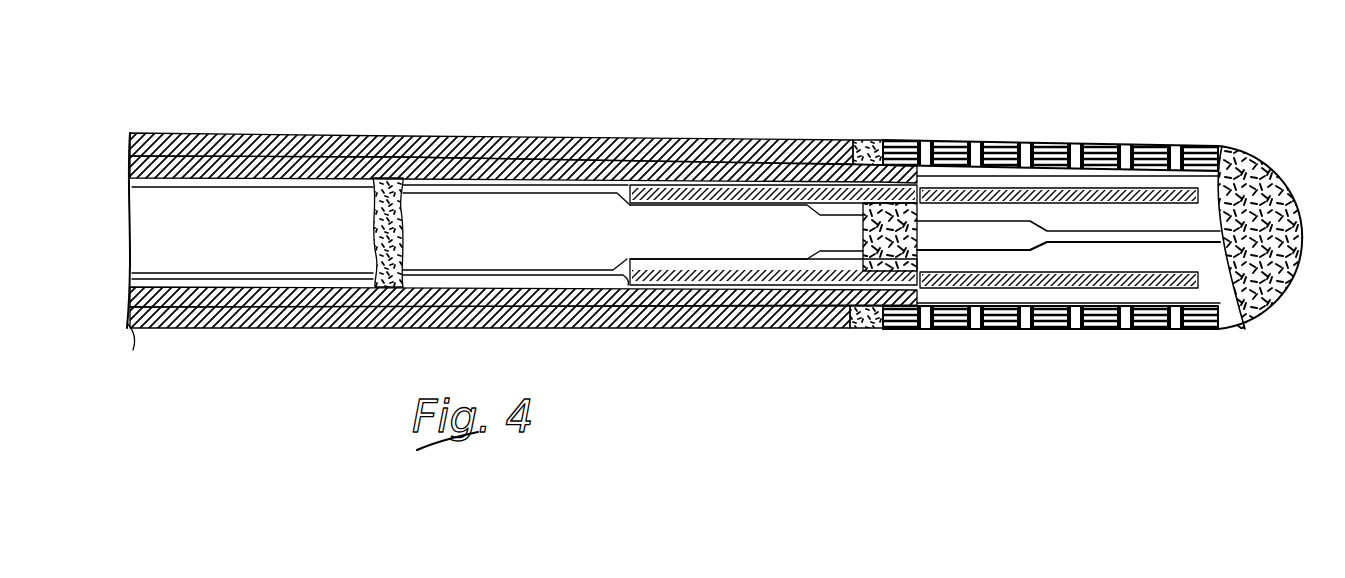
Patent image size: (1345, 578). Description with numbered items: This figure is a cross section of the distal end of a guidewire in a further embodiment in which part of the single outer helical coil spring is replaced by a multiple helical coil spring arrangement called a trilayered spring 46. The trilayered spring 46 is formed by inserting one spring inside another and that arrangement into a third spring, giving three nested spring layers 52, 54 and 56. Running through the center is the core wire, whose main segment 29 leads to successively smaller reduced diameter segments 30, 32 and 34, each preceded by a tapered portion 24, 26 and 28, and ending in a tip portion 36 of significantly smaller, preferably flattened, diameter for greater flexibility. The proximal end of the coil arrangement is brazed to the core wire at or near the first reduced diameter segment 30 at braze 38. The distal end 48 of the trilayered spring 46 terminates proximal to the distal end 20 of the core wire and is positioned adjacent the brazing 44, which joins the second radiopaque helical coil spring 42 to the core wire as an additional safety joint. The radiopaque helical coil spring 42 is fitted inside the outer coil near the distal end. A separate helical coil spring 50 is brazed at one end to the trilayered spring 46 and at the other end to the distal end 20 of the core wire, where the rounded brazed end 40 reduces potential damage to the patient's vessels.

The distal end of core wire 20 is at (1228, 323).
The tapered portion 24 is at (395, 182).
The tapered portion 26 is at (625, 281).
The tapered portion 28 is at (808, 262).
The main segment 29 is at (232, 203).
The reduced diameter segment 30 is at (528, 205).
The reduced diameter segment 32 is at (716, 228).
The reduced diameter segment 34 is at (983, 230).
The tip portion 36 is at (1132, 207).
The braze 38 is at (386, 287).
The brazed end 40 is at (1278, 328).
The second radiopaque helical coil spring 42 is at (830, 143).
The braze at proximal location 44 is at (920, 280).
The trilayered spring 46 is at (335, 132).
The distal end of trilayered spring 48 is at (873, 142).
The separate helical coil spring 50 is at (1115, 330).
The spring layer 52 is at (125, 311).
The spring layer 54 is at (123, 302).
The spring layer 56 is at (123, 290).